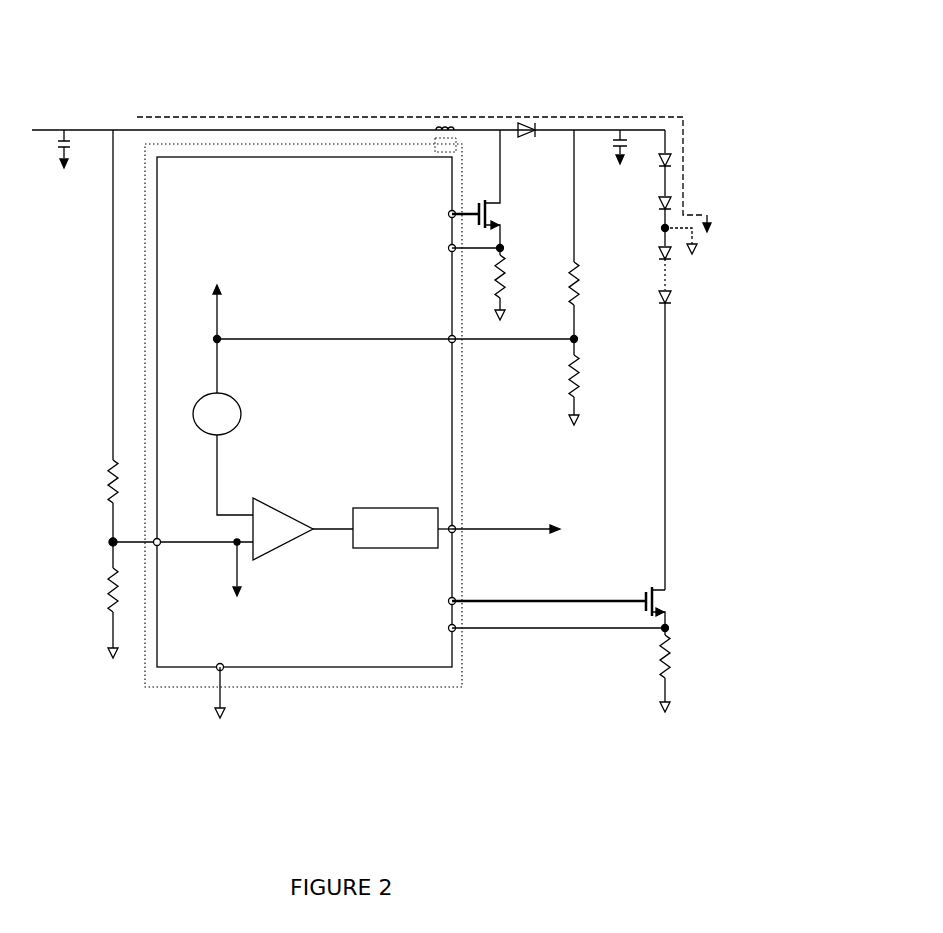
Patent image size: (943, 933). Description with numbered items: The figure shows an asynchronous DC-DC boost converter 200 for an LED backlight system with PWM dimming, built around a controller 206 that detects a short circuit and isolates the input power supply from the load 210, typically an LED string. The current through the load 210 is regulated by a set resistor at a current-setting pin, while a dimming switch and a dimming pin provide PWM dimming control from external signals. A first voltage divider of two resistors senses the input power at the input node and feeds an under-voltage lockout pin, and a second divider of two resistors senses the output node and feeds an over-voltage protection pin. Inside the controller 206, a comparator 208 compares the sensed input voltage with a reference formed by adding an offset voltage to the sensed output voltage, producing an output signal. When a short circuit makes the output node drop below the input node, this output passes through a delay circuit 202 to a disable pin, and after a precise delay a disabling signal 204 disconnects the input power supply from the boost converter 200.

The boost converter 200 is at (333, 52).
The delay circuit 202 is at (395, 528).
The disabling signal 204 is at (525, 529).
The controller 206 is at (475, 470).
The comparator 208 is at (268, 500).
The load 210 is at (718, 155).